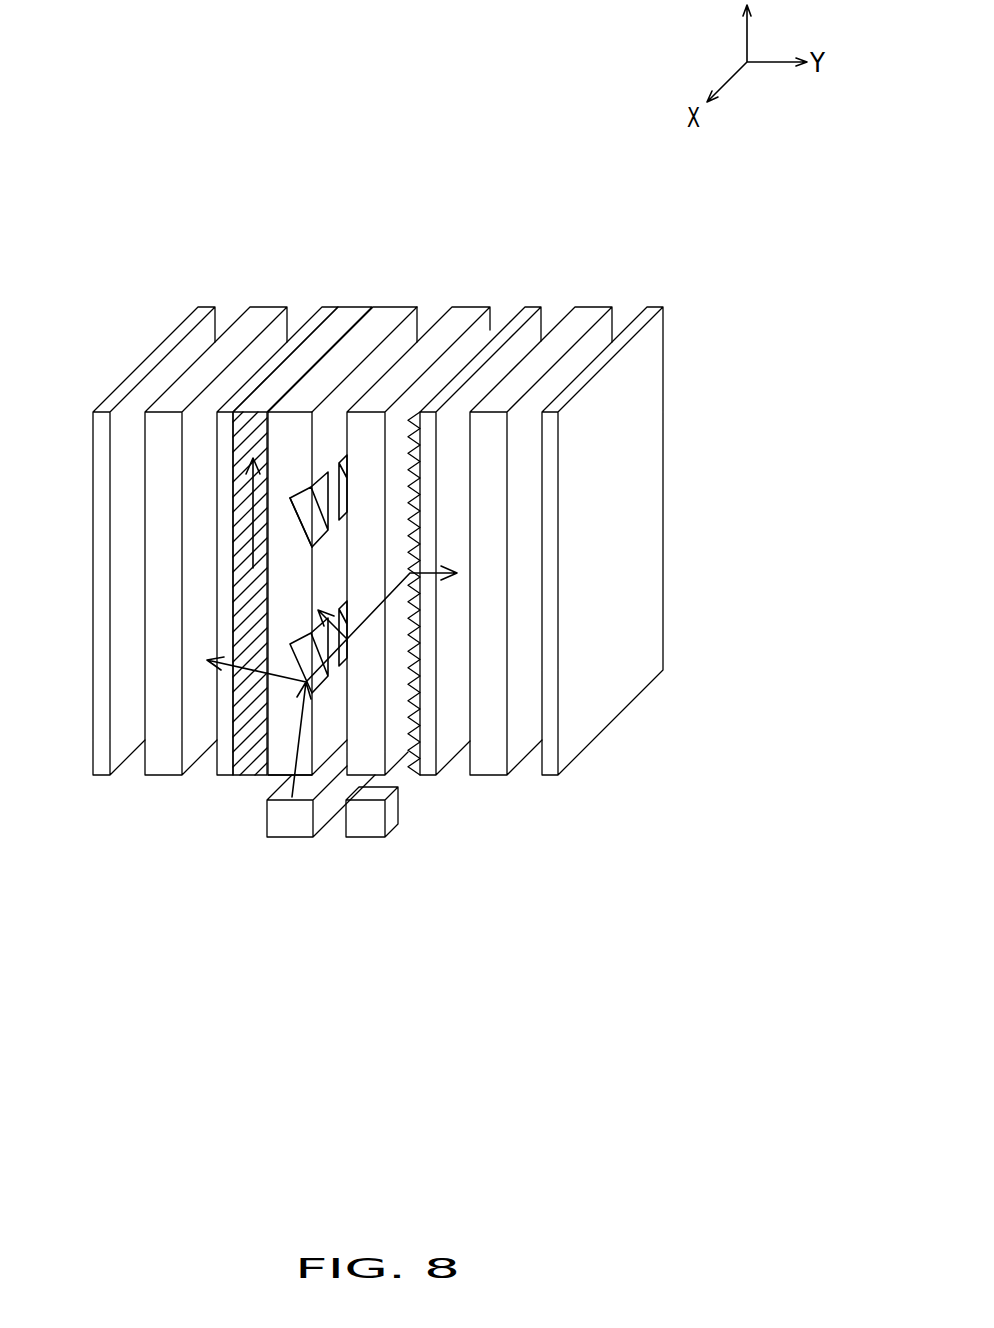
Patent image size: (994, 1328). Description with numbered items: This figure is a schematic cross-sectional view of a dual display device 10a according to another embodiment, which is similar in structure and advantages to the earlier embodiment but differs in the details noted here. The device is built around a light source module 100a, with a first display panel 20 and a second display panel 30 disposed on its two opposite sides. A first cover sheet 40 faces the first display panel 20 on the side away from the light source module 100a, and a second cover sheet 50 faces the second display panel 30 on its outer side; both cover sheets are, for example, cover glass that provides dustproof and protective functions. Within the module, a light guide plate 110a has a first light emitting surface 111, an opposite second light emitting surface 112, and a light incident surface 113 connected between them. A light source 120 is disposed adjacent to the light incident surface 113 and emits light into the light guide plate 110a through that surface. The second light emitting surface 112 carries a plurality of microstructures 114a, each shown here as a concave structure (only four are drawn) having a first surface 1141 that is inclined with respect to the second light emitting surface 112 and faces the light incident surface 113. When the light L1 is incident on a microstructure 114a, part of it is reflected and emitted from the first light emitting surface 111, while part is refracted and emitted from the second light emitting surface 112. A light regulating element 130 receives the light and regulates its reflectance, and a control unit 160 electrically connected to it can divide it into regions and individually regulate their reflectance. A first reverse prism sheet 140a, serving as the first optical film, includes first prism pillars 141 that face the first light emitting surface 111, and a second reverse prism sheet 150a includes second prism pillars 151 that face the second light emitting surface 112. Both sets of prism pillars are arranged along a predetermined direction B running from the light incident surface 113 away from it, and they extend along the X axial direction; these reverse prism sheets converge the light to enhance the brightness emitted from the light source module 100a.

The dual display device 10a is at (112, 105).
The light source module 100a is at (447, 209).
The first cover sheet 40 is at (202, 308).
The first display panel 20 is at (257, 312).
The first reverse prism sheet 140a is at (325, 310).
The first prism pillars 141 is at (238, 777).
The predetermined direction B is at (253, 521).
The light guide plate 110a is at (397, 312).
The first light emitting surface 111 is at (354, 305).
The second light emitting surface 112 is at (411, 317).
The light incident surface 113 is at (282, 777).
The microstructures 114a is at (332, 486).
The first surface 1141 is at (309, 514).
The light regulating element 130 is at (465, 312).
The second reverse prism sheet 150a is at (532, 313).
The second prism pillars 151 is at (415, 776).
The light source 120 is at (293, 823).
The control unit 160 is at (370, 823).
The light L1 is at (307, 757).
The second display panel 30 is at (590, 313).
The second cover sheet 50 is at (648, 313).